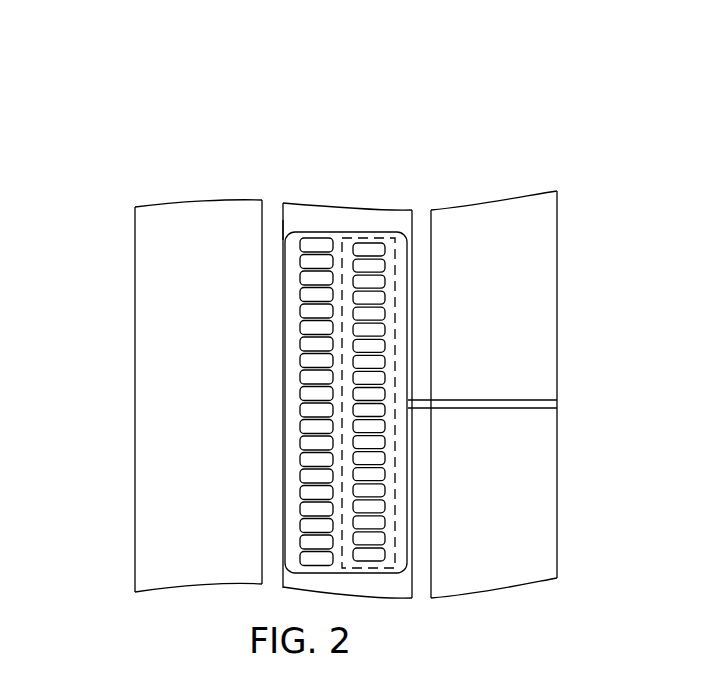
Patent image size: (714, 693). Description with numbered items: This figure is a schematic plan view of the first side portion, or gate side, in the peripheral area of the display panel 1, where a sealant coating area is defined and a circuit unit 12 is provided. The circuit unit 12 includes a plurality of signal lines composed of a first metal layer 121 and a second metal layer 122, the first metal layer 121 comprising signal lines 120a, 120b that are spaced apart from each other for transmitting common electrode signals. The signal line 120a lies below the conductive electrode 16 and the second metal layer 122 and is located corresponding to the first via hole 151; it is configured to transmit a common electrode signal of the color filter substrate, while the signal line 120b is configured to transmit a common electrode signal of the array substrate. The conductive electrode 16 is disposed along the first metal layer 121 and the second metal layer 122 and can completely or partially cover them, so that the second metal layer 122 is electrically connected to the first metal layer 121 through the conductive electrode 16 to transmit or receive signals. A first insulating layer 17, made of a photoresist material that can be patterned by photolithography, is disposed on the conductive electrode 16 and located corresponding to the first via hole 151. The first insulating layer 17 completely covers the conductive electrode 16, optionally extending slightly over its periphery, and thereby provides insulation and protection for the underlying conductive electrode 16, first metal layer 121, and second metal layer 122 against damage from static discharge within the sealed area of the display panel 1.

The display panel 1 is at (86, 82).
The circuit unit 12 is at (333, 70).
The first metal layer 121 is at (155, 110).
The second metal layer 122 is at (358, 232).
The signal line 120a is at (282, 222).
The signal line 120b is at (135, 256).
The conductive electrode 16 is at (383, 232).
The first insulating layer 17 is at (307, 277).
The first via hole 151 is at (307, 360).